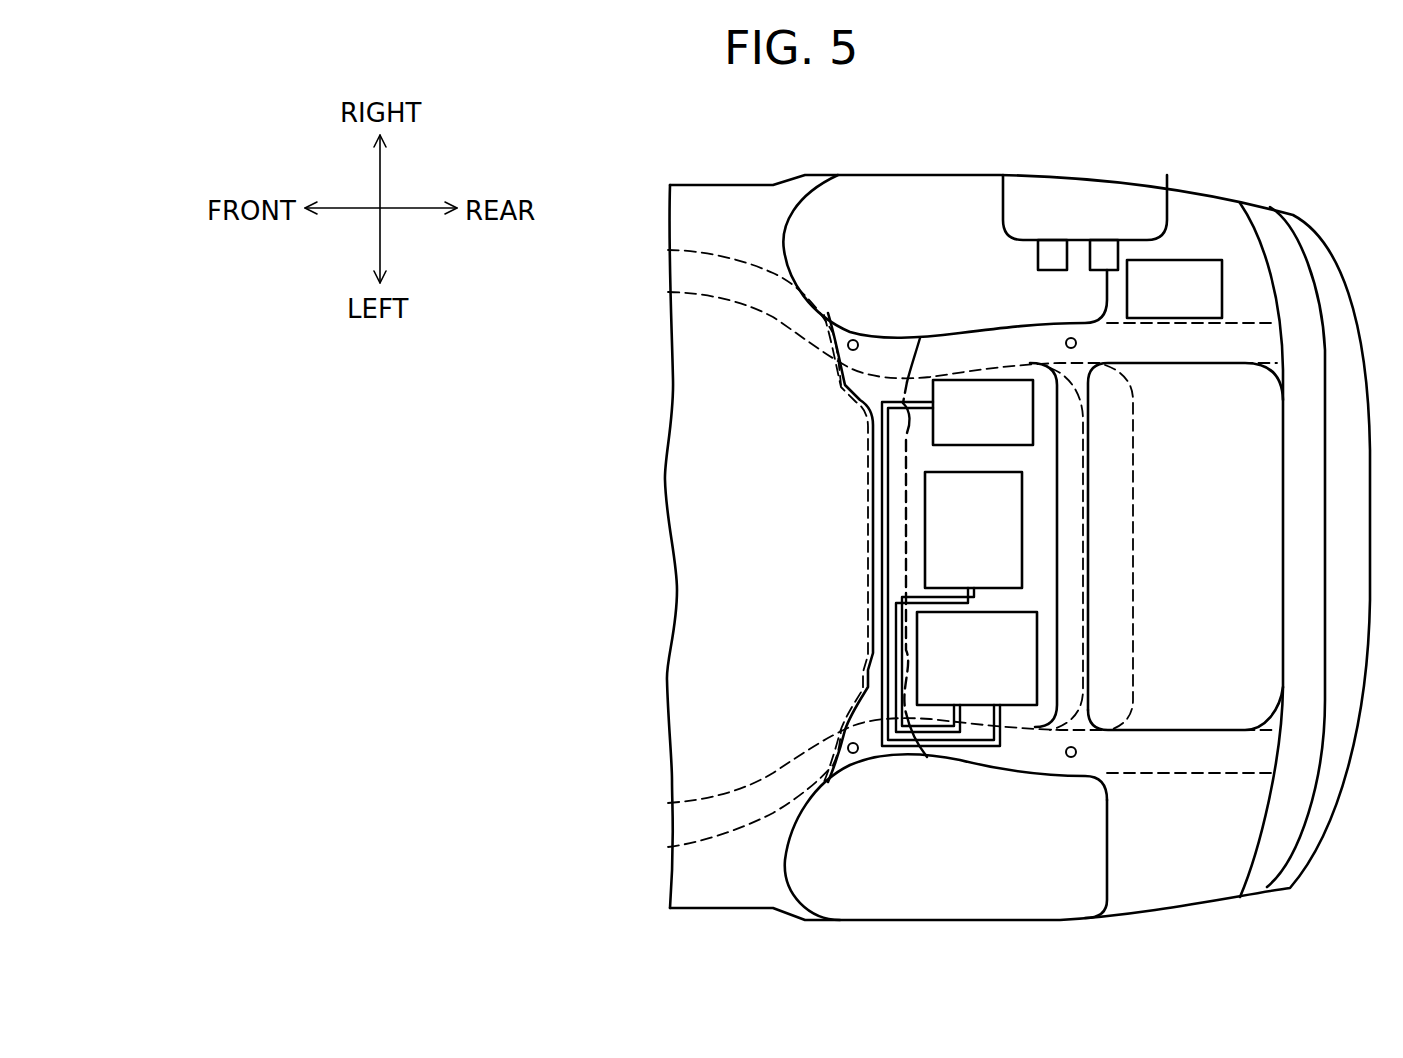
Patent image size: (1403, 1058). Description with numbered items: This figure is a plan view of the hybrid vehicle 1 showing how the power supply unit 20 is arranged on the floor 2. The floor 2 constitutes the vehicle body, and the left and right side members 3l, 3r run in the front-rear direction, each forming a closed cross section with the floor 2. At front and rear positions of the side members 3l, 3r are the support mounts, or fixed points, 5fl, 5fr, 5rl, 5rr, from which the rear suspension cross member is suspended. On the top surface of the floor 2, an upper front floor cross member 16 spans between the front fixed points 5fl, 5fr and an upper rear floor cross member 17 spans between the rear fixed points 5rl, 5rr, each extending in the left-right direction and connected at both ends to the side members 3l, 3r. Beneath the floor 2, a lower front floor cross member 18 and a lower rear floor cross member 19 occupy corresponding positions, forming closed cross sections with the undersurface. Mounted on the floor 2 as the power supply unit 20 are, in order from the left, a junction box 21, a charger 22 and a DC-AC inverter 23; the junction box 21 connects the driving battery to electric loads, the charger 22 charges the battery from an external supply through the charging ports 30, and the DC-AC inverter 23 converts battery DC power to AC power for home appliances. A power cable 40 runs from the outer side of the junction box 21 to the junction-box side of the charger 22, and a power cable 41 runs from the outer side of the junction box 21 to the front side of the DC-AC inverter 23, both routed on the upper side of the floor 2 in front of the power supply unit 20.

The hybrid vehicle 1 is at (1228, 120).
The floor 2 is at (693, 432).
The right side member 3r is at (699, 250).
The left side member 3l is at (697, 840).
The front right support mount (fixed point) 5fr is at (855, 339).
The rear right support mount (fixed point) 5rr is at (1067, 337).
The front left support mount (fixed point) 5fl is at (855, 754).
The rear left support mount (fixed point) 5rl is at (1072, 758).
The upper front floor cross member 16 is at (878, 702).
The upper rear floor cross member 17 is at (1073, 670).
The lower front floor cross member 18 is at (867, 667).
The lower rear floor cross member 19 is at (1137, 618).
The power supply unit 20 is at (1200, 412).
The junction box 21 is at (1022, 632).
The charger 22 is at (1007, 520).
The DC-AC inverter 23 is at (1013, 422).
The charging ports 30 is at (1107, 248).
The power cable 40 is at (937, 740).
The power cable 41 is at (980, 755).